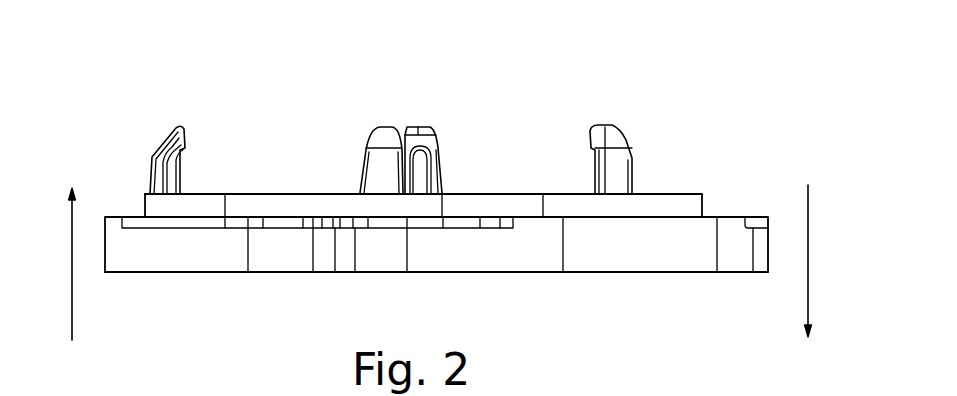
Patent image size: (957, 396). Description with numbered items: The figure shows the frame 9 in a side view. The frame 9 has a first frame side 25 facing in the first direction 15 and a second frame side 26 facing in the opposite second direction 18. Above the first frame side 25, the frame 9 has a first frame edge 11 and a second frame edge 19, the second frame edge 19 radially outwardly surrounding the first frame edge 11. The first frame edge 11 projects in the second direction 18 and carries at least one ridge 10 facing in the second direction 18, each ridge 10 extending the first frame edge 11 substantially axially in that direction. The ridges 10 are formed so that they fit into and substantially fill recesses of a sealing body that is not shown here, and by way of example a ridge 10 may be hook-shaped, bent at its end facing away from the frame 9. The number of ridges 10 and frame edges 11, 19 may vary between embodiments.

The frame 9 is at (146, 102).
The ridge 10 is at (617, 142).
The first frame edge 11 is at (680, 200).
The first direction 15 is at (808, 270).
The second direction 18 is at (72, 305).
The second frame edge 19 is at (735, 262).
The first frame side 25 is at (260, 278).
The second frame side 26 is at (307, 190).